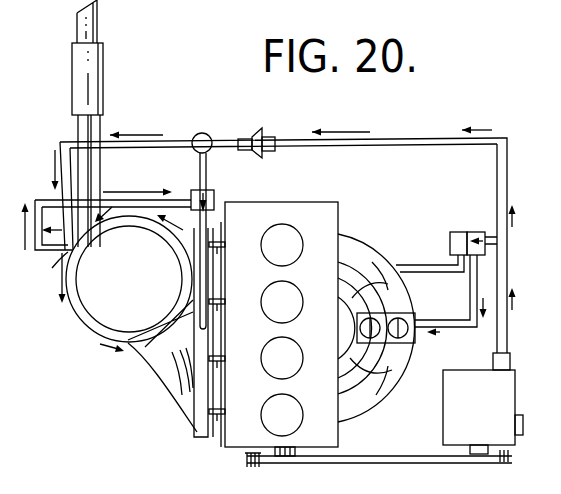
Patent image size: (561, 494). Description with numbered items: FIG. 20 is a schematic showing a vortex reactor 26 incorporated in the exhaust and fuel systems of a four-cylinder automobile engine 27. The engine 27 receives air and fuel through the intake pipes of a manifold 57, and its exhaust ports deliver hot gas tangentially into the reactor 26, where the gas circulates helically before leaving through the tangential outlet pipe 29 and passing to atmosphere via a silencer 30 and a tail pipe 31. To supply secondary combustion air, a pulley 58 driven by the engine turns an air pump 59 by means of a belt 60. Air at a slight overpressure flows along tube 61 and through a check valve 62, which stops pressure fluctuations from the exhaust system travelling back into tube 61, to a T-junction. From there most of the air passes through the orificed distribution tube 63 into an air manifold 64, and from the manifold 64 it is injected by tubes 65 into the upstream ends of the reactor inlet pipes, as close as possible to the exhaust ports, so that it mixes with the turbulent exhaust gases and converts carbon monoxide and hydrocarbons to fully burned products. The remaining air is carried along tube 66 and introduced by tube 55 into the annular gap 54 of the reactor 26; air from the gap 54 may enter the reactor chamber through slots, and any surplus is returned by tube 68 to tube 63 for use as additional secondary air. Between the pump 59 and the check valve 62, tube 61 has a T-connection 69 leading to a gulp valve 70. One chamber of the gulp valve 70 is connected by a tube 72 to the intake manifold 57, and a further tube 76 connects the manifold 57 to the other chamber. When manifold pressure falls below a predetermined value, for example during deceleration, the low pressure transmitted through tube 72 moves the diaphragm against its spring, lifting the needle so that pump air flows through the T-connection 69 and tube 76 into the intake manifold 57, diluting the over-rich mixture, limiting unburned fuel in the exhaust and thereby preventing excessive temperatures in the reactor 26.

The reactor 26 is at (90, 343).
The engine 27 is at (302, 194).
The tangential outlet pipe 29 is at (78, 133).
The silencer 30 is at (93, 50).
The tail pipe 31 is at (79, 31).
The annular gap 54 is at (82, 312).
The tube 55 is at (68, 252).
The intake manifold 57 is at (375, 242).
The pulley 58 is at (259, 470).
The air pump 59 is at (482, 388).
The belt 60 is at (406, 462).
The tube 61 is at (503, 188).
The check valve 62 is at (258, 131).
The orificed distribution tube 63 is at (149, 362).
The air manifold 64 is at (202, 414).
The tubes 65 is at (212, 228).
The tube 66 is at (193, 140).
The tube 68 is at (35, 203).
The T-connection 69 is at (492, 232).
The gulp valve 70 is at (455, 220).
The tube 72 is at (425, 272).
The tube 76 is at (430, 338).